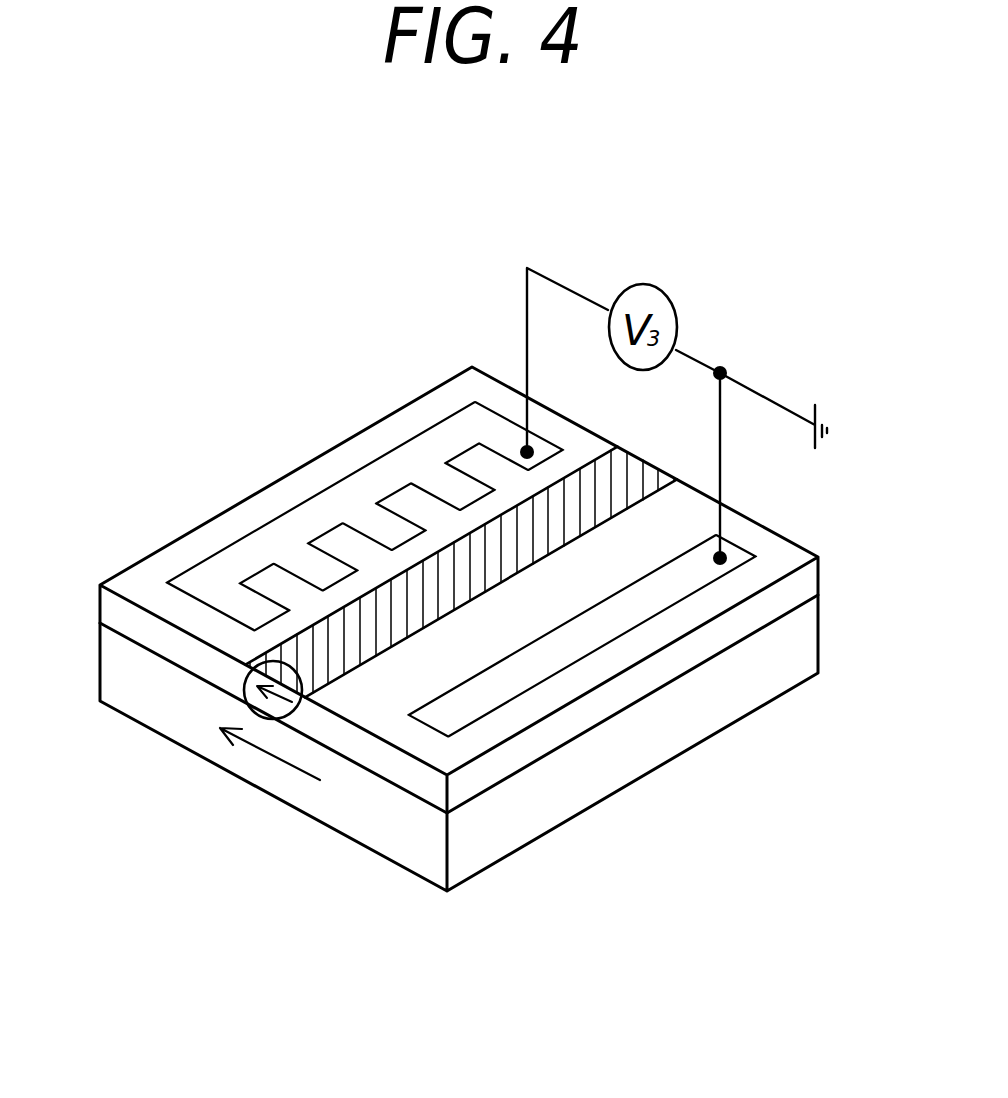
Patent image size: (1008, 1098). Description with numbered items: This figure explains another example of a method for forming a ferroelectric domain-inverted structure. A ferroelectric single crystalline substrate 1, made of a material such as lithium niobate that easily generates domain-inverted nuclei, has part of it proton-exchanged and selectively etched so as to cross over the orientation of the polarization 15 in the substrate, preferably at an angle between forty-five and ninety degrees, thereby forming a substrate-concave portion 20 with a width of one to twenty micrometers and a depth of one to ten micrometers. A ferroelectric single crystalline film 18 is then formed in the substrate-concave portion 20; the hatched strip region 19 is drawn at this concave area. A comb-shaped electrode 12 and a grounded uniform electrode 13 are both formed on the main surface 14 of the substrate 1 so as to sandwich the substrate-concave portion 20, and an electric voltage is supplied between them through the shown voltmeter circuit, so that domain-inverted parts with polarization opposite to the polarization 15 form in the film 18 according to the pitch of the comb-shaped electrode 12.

The ferroelectric single crystalline substrate 1 is at (135, 703).
The comb-shaped electrode 12 is at (213, 585).
The uniform electrode 13 is at (655, 600).
The main surface 14 is at (482, 380).
The orientation of the polarization 15 is at (263, 755).
The ferroelectric single crystalline film 18 is at (350, 655).
The groove side wall region 19 is at (271, 690).
The substrate-concave portion 20 is at (246, 684).